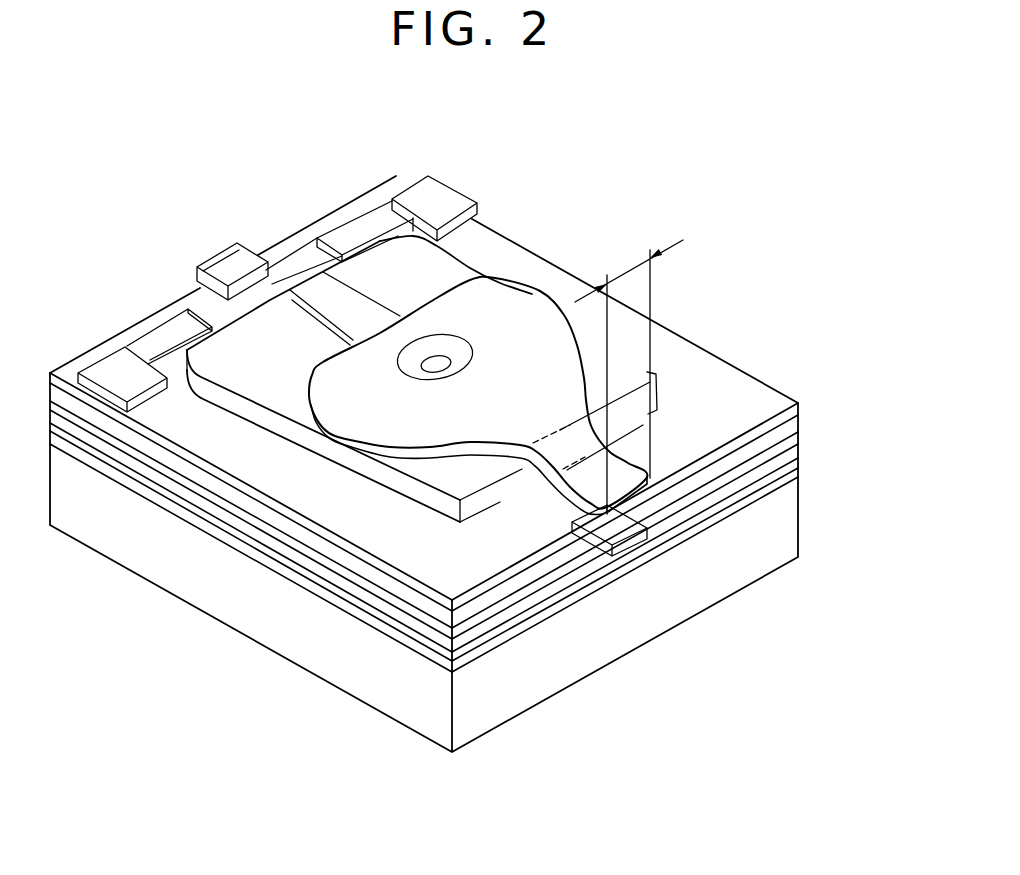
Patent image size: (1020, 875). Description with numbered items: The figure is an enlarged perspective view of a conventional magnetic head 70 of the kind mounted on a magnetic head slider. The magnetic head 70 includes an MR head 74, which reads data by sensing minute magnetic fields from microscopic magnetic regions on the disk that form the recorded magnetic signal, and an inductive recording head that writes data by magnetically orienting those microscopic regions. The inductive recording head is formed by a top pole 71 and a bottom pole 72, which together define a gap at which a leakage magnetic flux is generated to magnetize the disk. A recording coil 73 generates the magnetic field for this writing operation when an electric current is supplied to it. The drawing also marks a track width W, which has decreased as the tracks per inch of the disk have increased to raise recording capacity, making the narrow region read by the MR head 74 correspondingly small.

The magnetic head 70 is at (588, 161).
The top pole 71 is at (453, 513).
The bottom pole 72 is at (800, 438).
The recording coil 73 is at (330, 462).
The MR head 74 is at (600, 540).